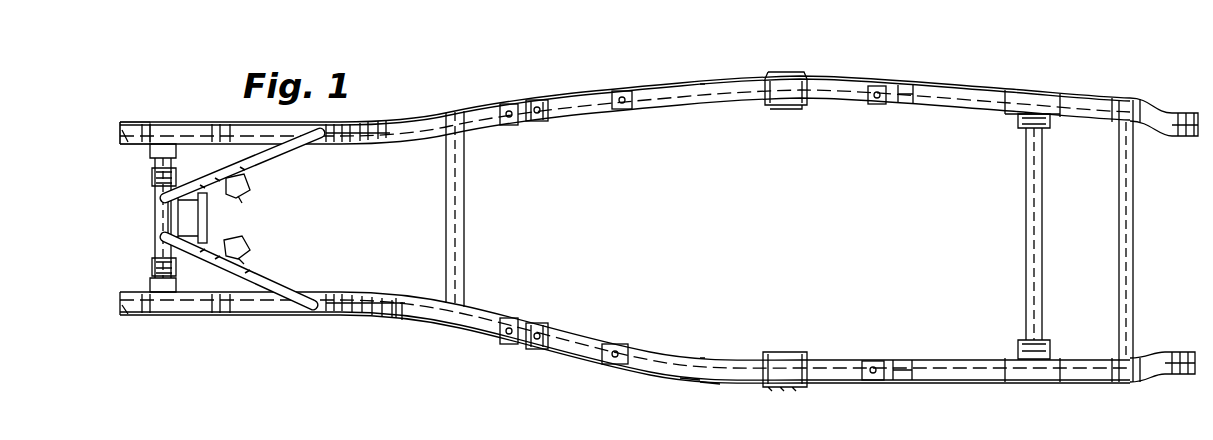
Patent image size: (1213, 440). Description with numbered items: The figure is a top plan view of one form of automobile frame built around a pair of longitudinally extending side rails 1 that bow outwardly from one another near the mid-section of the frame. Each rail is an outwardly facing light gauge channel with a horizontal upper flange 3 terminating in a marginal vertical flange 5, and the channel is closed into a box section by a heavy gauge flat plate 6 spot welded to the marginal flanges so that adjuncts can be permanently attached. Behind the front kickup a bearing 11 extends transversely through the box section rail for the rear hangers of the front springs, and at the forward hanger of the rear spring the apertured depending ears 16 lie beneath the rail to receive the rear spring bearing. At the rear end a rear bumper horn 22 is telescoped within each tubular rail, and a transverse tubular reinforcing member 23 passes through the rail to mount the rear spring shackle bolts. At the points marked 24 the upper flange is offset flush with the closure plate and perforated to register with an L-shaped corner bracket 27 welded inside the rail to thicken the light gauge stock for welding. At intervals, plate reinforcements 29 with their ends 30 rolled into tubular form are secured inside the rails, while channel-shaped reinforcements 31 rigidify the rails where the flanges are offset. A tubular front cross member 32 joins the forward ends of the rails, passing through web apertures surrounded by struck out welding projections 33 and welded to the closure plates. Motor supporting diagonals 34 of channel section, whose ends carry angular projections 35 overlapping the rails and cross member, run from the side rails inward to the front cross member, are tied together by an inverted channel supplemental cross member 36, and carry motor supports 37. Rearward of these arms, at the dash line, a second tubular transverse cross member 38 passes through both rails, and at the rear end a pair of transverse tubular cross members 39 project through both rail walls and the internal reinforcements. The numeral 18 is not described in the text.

The side rails 1 is at (598, 112).
The upper flange 3 is at (716, 92).
The marginal vertical flange 5 is at (690, 386).
The channel closing plate 6 is at (712, 386).
The bearing 11 is at (380, 146).
The depending ears 16 is at (786, 109).
The bracket 18 is at (786, 389).
The rear bumper horn 22 is at (1165, 127).
The transverse tubular reinforcing member 23 is at (1136, 99).
The upper flange offset point 24 is at (536, 124).
The L-shaped corner bracket 27 is at (632, 109).
The reinforcements 29 is at (906, 106).
The rolled ends 30 is at (212, 318).
The channel-shaped reinforcements 31 is at (394, 298).
The tubular front cross member 32 is at (158, 176).
The struck out welding projections 33 is at (152, 146).
The motor supporting diagonals 34 is at (288, 158).
The angular projections 35 is at (308, 294).
The supplemental cross member 36 is at (208, 222).
The motor supports 37 is at (246, 186).
The second transverse cross member 38 is at (466, 222).
The rear transverse tubular cross members 39 is at (1118, 240).